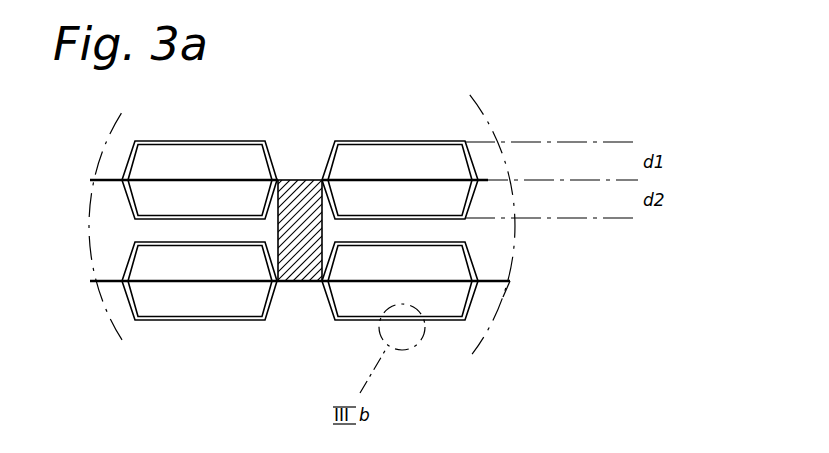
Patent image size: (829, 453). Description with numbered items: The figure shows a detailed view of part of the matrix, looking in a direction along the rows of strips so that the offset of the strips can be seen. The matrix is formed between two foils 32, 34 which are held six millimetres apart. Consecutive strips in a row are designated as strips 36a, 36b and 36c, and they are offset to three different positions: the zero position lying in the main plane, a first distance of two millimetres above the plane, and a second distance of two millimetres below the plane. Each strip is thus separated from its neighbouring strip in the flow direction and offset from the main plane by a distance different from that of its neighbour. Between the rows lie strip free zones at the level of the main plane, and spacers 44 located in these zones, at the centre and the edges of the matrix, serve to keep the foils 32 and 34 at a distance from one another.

The foil 32 is at (497, 283).
The foil 34 is at (488, 180).
The strip 36a is at (158, 159).
The strip 36b is at (175, 141).
The strip 36c is at (213, 180).
The spacer 44 is at (296, 282).